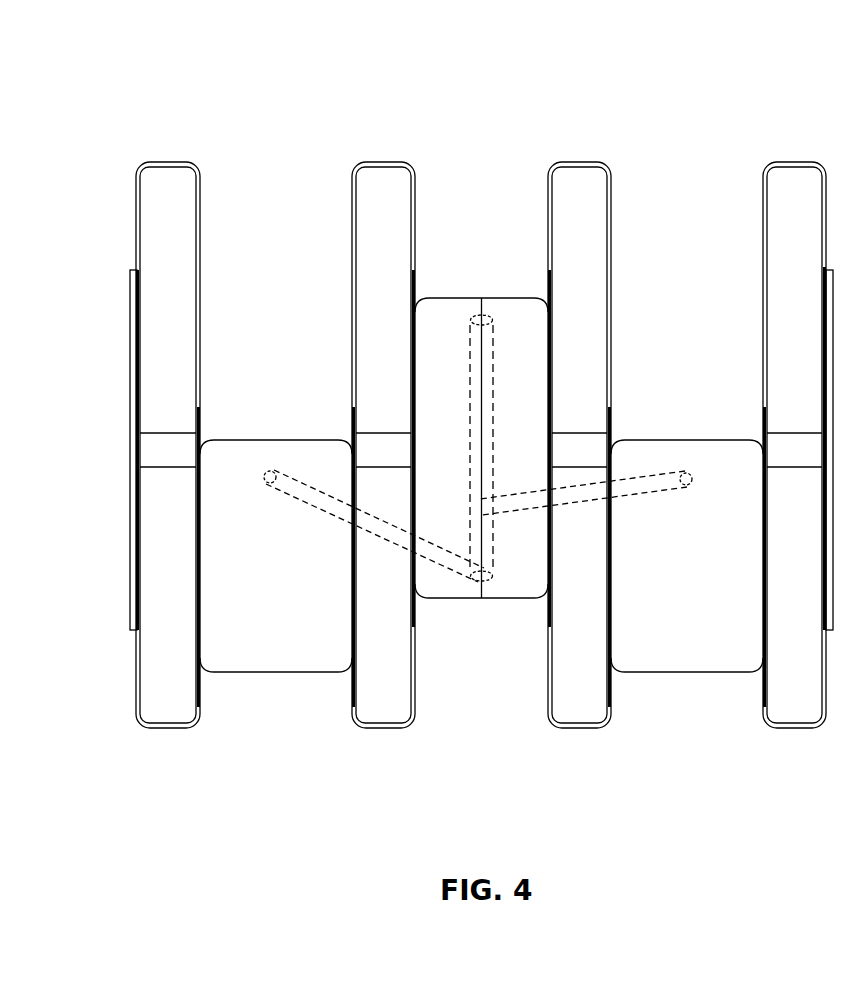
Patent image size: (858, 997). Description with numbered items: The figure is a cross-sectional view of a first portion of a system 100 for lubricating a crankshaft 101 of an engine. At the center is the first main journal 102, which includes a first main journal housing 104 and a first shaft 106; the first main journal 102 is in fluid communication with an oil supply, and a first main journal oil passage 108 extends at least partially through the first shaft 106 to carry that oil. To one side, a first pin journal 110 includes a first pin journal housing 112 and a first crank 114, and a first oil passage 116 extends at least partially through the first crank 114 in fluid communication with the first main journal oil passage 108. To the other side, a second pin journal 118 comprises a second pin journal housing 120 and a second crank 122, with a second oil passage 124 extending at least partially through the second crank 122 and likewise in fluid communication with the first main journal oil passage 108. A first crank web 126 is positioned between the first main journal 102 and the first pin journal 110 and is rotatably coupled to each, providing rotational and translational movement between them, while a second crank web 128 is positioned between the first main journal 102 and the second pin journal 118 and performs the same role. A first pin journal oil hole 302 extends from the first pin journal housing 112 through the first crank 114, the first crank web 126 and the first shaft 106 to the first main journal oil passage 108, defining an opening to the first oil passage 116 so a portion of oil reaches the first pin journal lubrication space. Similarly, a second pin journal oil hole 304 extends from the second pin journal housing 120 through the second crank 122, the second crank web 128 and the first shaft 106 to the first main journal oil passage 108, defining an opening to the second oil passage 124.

The system 100 is at (434, 407).
The crankshaft 101 is at (95, 380).
The first main journal 102 is at (451, 630).
The first main journal housing 104 is at (445, 300).
The first shaft 106 is at (511, 330).
The first main journal oil passage 108 is at (482, 584).
The first pin journal 110 is at (697, 703).
The first pin journal housing 112 is at (650, 440).
The first crank 114 is at (735, 466).
The first oil passage 116 is at (632, 498).
The second pin journal 118 is at (261, 702).
The second pin journal housing 120 is at (228, 440).
The second crank 122 is at (317, 465).
The second oil passage 124 is at (331, 510).
The first crank web 126 is at (583, 728).
The second crank web 128 is at (382, 728).
The first pin journal oil hole 302 is at (686, 473).
The second pin journal oil hole 304 is at (270, 471).